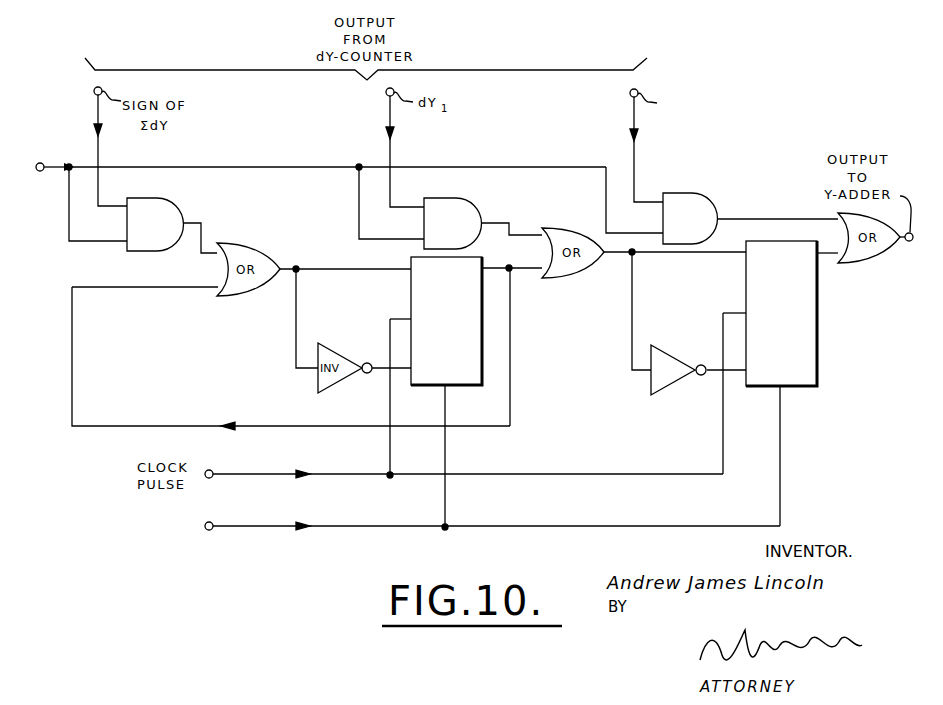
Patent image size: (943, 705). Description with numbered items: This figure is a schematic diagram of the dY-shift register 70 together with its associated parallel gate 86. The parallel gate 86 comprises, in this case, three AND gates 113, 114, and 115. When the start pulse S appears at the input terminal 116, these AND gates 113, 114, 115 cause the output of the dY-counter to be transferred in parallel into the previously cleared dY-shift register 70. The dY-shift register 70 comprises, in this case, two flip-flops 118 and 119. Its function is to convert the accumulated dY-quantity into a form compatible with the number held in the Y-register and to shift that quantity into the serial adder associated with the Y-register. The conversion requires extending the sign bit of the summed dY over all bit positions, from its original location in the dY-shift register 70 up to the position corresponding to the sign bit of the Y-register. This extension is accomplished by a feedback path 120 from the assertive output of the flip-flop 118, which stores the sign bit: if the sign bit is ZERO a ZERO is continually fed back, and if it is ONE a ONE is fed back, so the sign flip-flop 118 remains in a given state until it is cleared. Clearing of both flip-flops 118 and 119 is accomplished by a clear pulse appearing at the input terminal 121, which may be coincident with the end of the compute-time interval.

The dY-shift register 70 is at (828, 386).
The parallel gate 86 is at (706, 148).
The AND gate 113 is at (178, 205).
The AND gate 114 is at (476, 204).
The AND gate 115 is at (716, 205).
The input terminal 116 is at (38, 172).
The flip-flop 118 is at (411, 296).
The flip-flop 119 is at (746, 280).
The feedback path 120 is at (510, 330).
The input terminal 121 is at (211, 530).